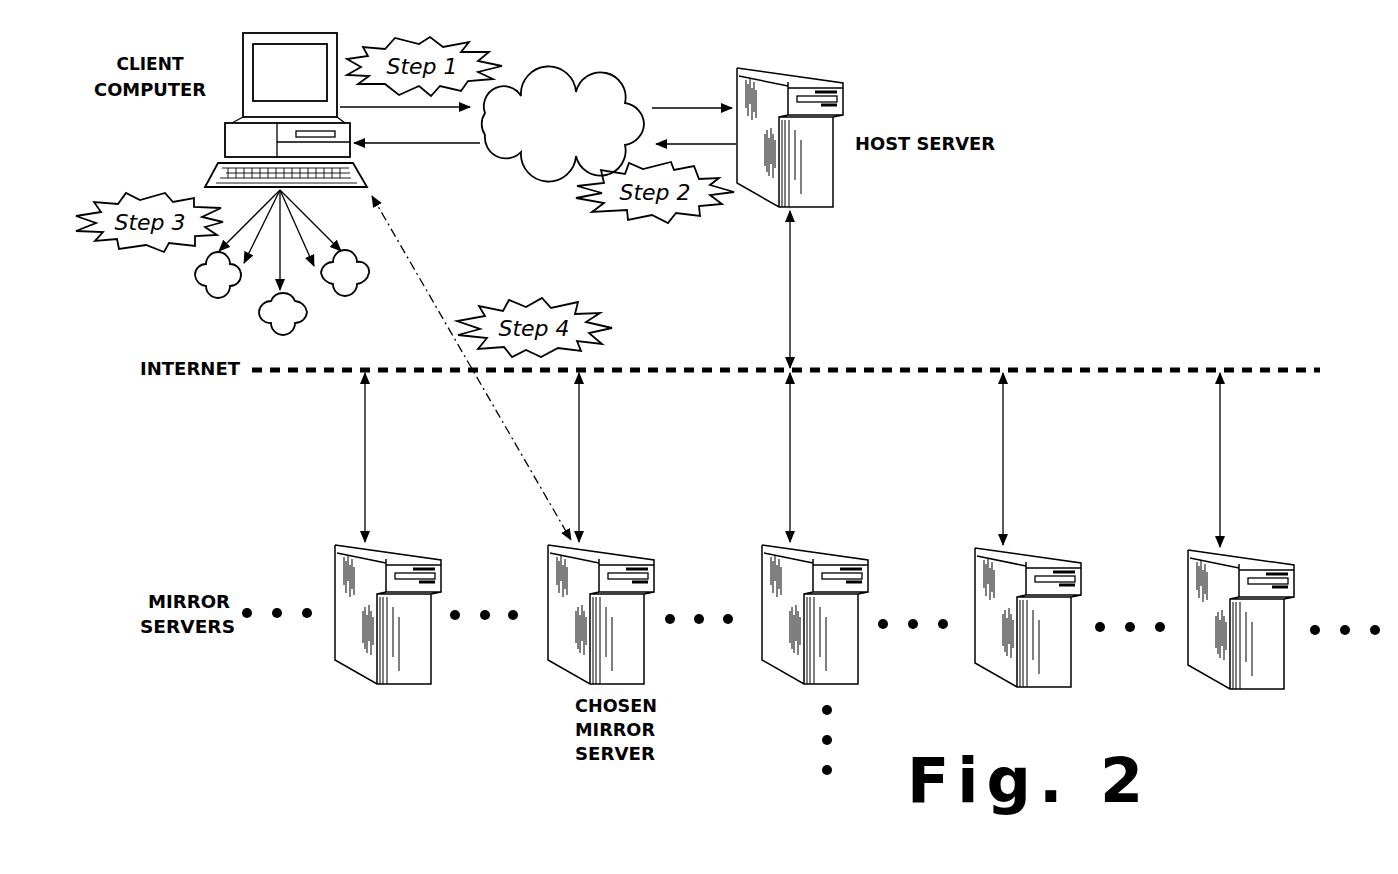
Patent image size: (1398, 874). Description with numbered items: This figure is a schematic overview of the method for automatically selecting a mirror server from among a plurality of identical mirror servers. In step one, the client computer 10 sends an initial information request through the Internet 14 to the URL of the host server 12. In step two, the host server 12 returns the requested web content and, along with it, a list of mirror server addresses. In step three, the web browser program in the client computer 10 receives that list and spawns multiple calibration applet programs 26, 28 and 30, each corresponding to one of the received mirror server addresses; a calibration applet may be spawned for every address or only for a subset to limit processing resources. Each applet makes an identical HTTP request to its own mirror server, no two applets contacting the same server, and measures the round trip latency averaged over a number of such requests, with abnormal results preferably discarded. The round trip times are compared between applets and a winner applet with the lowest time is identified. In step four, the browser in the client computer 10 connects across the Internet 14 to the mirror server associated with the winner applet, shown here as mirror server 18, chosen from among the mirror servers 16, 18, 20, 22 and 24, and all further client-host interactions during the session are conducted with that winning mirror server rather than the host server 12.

The client computer 10 is at (225, 143).
The host server 12 is at (835, 178).
The Internet 14 is at (553, 88).
The mirror server 16 is at (345, 637).
The mirror server 18 is at (566, 645).
The mirror server 20 is at (862, 655).
The mirror server 22 is at (1075, 655).
The mirror server 24 is at (1290, 655).
The calibration applet program 26 is at (208, 292).
The calibration applet program 28 is at (300, 325).
The calibration applet program 30 is at (348, 290).